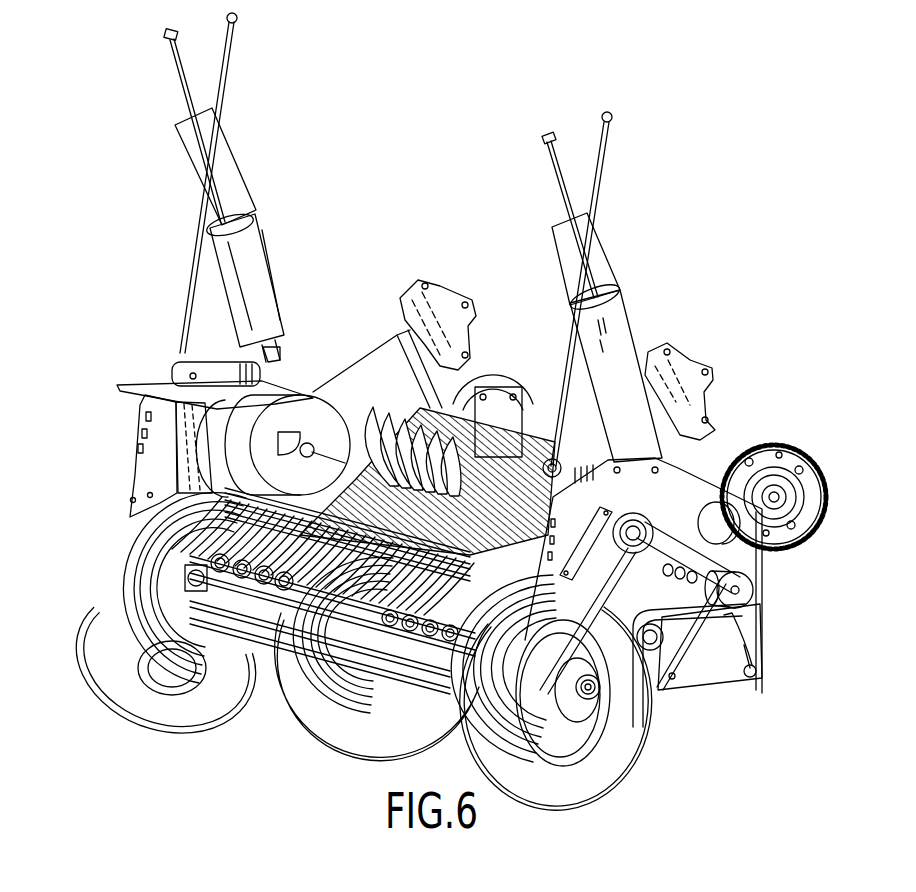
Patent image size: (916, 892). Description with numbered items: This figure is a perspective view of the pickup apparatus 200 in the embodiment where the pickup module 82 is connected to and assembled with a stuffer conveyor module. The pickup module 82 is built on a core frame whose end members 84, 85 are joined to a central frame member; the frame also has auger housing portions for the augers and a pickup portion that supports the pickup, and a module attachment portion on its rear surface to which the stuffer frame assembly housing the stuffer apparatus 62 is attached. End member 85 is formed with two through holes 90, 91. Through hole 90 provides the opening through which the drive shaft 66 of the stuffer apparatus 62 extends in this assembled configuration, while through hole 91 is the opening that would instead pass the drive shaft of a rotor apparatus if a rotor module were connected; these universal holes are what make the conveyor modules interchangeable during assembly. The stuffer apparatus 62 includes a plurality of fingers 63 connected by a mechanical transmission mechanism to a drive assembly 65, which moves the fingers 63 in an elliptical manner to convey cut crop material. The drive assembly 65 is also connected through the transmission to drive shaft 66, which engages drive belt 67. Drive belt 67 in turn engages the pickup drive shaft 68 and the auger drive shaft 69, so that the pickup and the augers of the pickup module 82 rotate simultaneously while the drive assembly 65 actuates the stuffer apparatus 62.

The pickup apparatus 200 is at (710, 217).
The stuffer apparatus 62 is at (369, 380).
The fingers 63 is at (430, 347).
The drive assembly 65 is at (822, 486).
The drive shaft 66 is at (742, 597).
The drive belt 67 is at (750, 580).
The pickup drive shaft 68 is at (579, 700).
The auger drive shaft 69 is at (648, 515).
The pickup module 82 is at (298, 740).
The end member 84 is at (173, 452).
The end member 85 is at (673, 495).
The through hole 90 is at (690, 602).
The through hole 91 is at (737, 538).